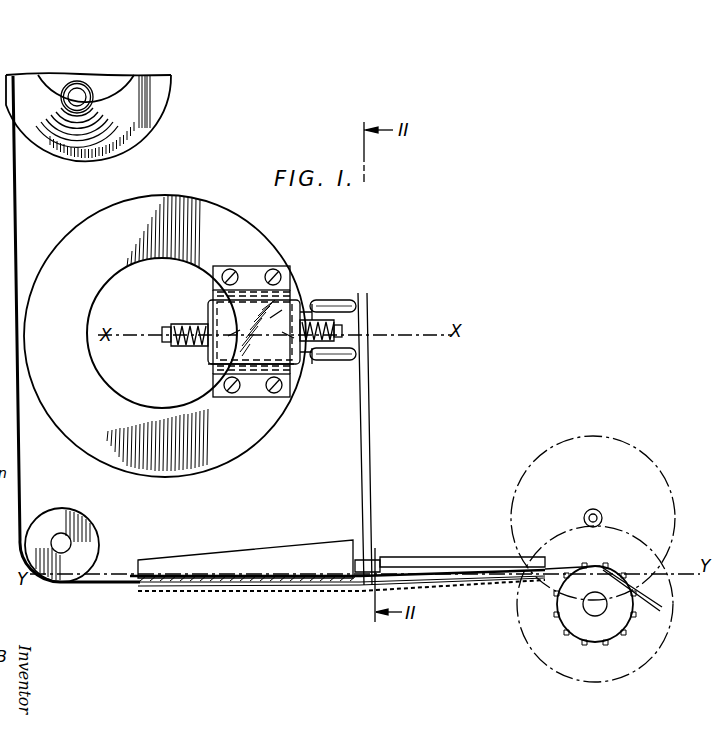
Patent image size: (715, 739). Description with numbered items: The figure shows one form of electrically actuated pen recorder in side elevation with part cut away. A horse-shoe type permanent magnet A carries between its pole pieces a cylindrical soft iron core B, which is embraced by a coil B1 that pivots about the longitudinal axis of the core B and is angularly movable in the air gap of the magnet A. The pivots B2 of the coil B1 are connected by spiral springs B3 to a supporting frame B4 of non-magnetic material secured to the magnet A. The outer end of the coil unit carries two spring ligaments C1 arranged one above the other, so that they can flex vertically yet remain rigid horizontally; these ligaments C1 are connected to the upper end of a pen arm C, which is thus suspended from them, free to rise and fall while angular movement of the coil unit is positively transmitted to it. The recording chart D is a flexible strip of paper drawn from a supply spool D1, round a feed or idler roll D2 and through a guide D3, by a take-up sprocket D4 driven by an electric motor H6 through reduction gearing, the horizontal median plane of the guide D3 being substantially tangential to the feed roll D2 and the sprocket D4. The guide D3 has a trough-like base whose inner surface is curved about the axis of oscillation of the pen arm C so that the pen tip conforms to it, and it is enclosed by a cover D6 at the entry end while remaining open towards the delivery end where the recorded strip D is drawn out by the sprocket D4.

The supply spool D1 is at (163, 126).
The permanent magnet A is at (216, 208).
The cylindrical soft iron core B is at (294, 290).
The coil B1 is at (214, 300).
The pivots B2 is at (299, 307).
The spiral springs B3 is at (190, 345).
The supporting frame B4 is at (293, 372).
The pen arm C is at (368, 420).
The spring ligaments C1 is at (352, 316).
The chart D is at (24, 502).
The feed roll D2 is at (90, 540).
The guide D3 is at (240, 590).
The take-up sprocket D4 is at (570, 622).
The cover D6 is at (222, 560).
The electric motor H6 is at (606, 465).